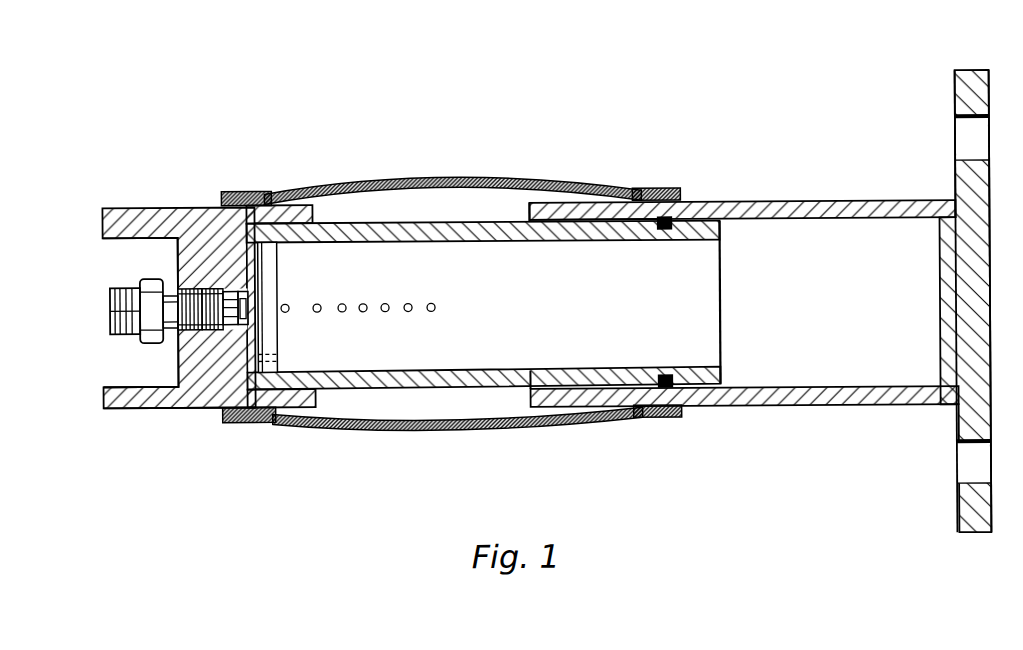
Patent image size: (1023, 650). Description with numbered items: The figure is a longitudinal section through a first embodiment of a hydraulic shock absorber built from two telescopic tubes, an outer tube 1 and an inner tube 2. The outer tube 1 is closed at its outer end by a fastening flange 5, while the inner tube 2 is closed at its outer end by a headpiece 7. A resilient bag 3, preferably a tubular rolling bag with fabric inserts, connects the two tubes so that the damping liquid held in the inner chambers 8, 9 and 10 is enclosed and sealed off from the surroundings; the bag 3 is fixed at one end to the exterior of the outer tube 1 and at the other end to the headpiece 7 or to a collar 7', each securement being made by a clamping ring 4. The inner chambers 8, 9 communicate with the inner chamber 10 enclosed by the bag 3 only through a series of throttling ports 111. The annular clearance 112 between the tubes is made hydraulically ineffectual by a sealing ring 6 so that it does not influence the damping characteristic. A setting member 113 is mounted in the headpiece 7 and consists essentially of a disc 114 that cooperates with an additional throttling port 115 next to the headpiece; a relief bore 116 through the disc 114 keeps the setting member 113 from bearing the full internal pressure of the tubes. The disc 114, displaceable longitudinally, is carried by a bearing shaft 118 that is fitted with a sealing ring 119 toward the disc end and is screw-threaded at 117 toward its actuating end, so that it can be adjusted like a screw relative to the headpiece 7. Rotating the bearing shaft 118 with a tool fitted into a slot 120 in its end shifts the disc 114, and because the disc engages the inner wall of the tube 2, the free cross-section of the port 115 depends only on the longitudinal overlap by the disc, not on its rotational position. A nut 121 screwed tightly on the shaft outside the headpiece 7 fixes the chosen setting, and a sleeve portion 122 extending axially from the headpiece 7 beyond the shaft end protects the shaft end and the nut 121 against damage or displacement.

The outer tube 1 is at (802, 215).
The inner tube 2 is at (402, 223).
The resilient bag 3 is at (356, 186).
The clamping ring 4 is at (254, 190).
The fastening flange 5 is at (974, 80).
The sealing ring 6 is at (686, 206).
The headpiece 7 is at (179, 336).
The collar 7' is at (284, 272).
The inner chamber 8 is at (839, 319).
The inner chamber 9 is at (612, 317).
The inner chamber 10 is at (460, 219).
The throttling ports 111 is at (428, 303).
The annular clearance 112 is at (562, 218).
The setting member 113 is at (133, 350).
The disc 114 is at (276, 260).
The throttling port 115 is at (289, 311).
The relief bore 116 is at (282, 358).
The screw thread 117 is at (193, 287).
The bearing shaft 118 is at (221, 290).
The sealing ring 119 is at (242, 323).
The slot 120 is at (110, 309).
The nut 121 is at (141, 278).
The sleeve portion 122 is at (146, 400).